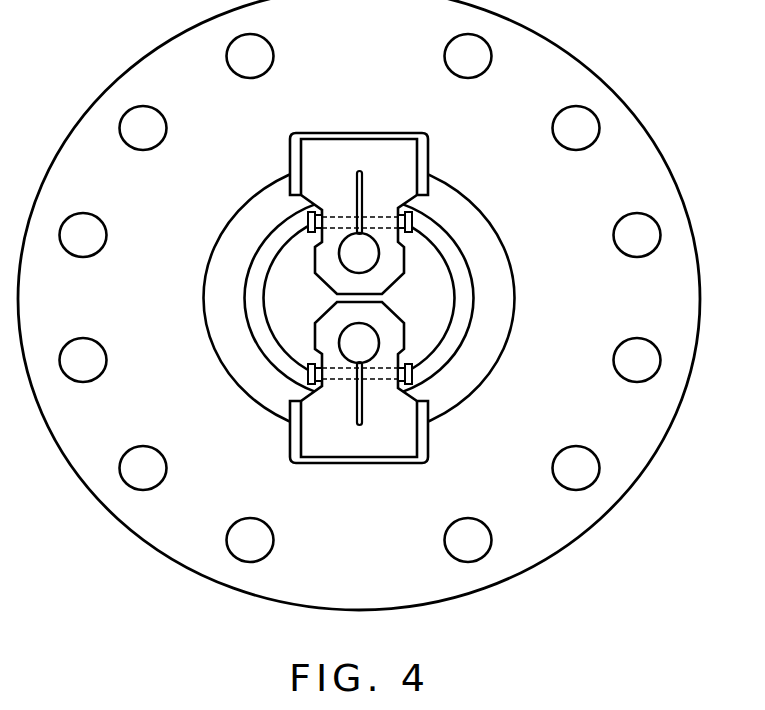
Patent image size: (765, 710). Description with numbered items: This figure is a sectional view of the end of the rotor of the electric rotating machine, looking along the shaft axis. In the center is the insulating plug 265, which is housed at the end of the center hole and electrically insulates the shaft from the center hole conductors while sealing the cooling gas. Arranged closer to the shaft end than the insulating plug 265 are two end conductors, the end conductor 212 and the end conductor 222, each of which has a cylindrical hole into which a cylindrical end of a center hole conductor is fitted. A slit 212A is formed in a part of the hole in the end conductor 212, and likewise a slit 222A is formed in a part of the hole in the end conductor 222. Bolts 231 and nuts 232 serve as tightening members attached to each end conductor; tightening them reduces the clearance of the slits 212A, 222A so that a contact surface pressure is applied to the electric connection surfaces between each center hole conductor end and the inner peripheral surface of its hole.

The end conductor 212 is at (379, 157).
The slit 212A is at (363, 183).
The end conductor 222 is at (379, 443).
The slit 222A is at (363, 413).
The bolt 231 is at (307, 221).
The nut 232 is at (412, 224).
The insulating plug 265 is at (437, 297).